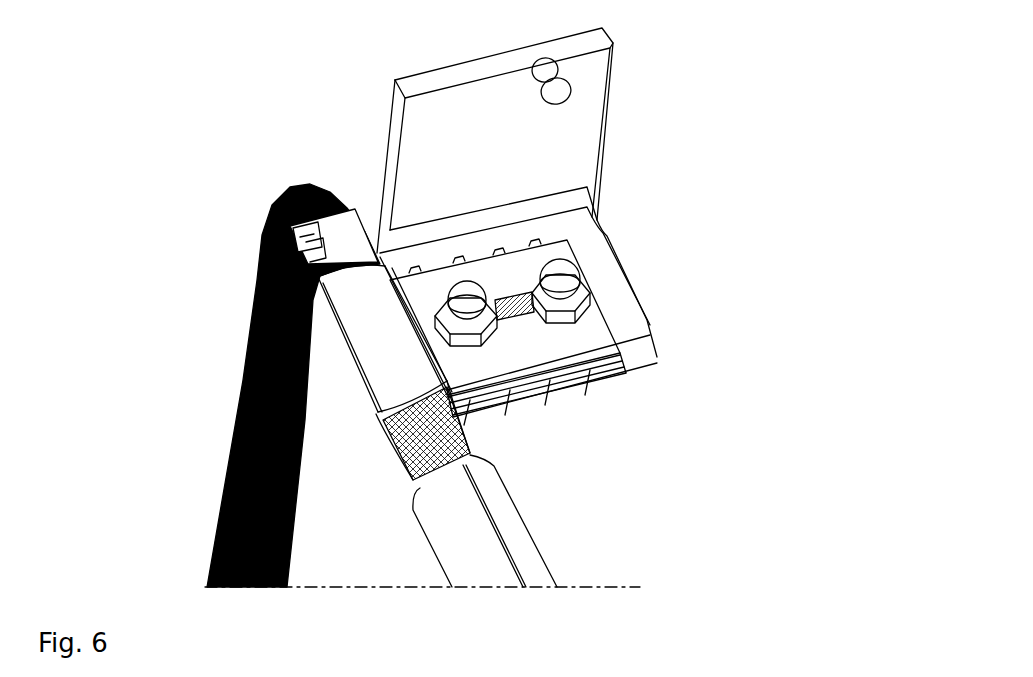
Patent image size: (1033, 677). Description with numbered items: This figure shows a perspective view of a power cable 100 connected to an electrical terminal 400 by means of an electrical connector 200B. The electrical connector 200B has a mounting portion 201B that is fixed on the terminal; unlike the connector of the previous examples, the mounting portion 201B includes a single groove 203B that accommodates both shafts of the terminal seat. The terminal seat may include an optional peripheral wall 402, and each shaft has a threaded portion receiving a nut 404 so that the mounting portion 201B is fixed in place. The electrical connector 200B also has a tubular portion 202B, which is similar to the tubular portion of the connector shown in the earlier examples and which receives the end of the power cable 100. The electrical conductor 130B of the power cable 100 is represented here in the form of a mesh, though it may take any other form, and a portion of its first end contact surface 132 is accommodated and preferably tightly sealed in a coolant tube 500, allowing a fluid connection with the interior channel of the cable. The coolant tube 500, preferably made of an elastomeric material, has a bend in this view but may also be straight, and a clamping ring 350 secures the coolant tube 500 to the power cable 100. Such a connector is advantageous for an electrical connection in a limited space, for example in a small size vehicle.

The power cable 100 is at (575, 533).
The electrical conductor 130B is at (474, 430).
The first end contact surface 132 is at (428, 478).
The electrical connector 200B is at (634, 386).
The mounting portion 201B is at (643, 328).
The tubular portion 202B is at (366, 395).
The single groove 203B is at (518, 312).
The clamping ring 350 is at (360, 215).
The electrical terminal 400 is at (674, 36).
The peripheral wall 402 is at (557, 277).
The nut 404 is at (576, 285).
The coolant tube 500 is at (242, 313).